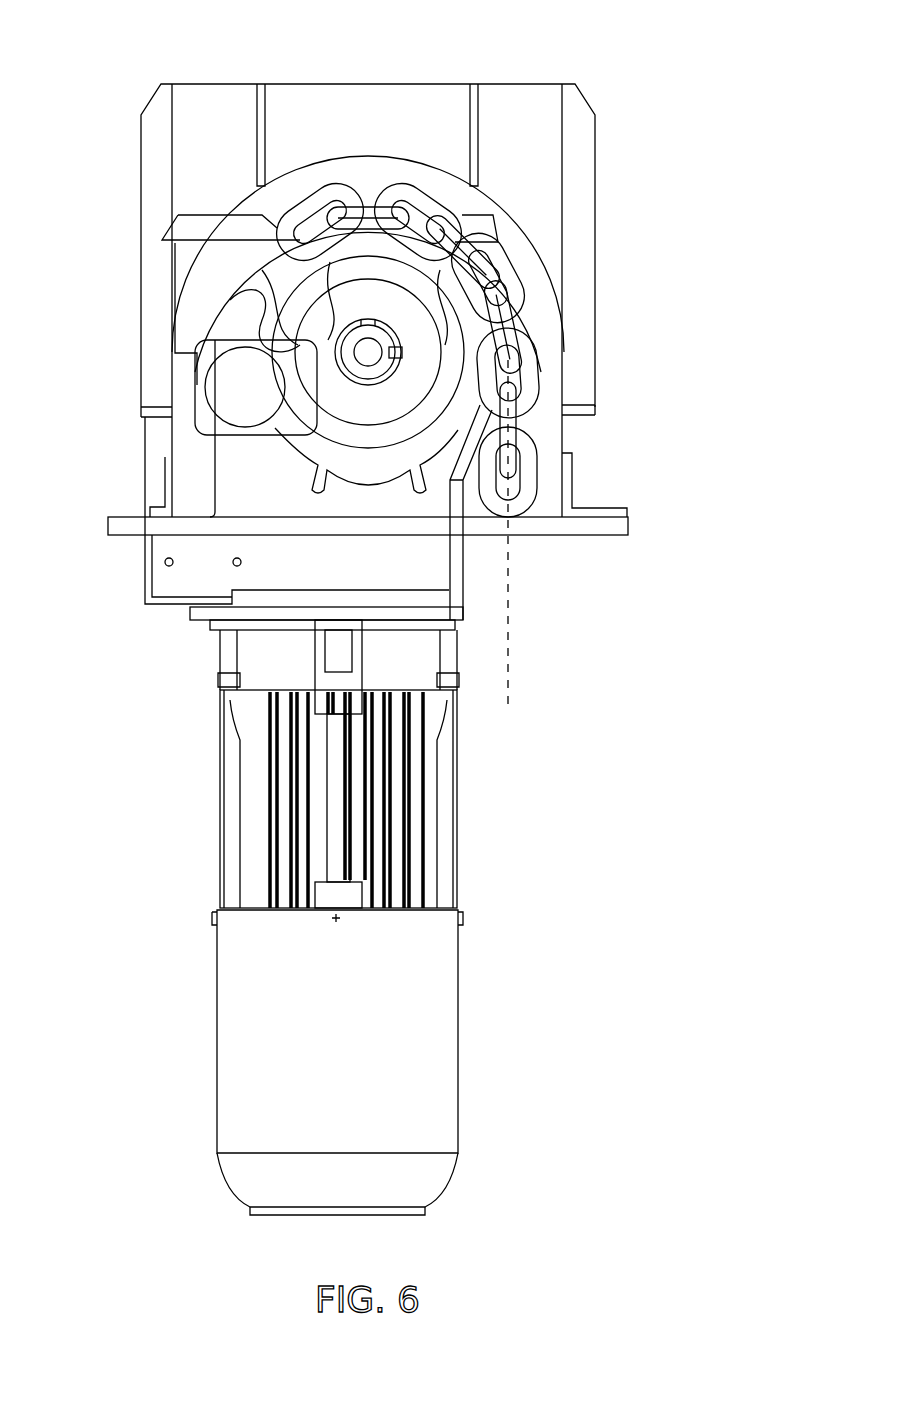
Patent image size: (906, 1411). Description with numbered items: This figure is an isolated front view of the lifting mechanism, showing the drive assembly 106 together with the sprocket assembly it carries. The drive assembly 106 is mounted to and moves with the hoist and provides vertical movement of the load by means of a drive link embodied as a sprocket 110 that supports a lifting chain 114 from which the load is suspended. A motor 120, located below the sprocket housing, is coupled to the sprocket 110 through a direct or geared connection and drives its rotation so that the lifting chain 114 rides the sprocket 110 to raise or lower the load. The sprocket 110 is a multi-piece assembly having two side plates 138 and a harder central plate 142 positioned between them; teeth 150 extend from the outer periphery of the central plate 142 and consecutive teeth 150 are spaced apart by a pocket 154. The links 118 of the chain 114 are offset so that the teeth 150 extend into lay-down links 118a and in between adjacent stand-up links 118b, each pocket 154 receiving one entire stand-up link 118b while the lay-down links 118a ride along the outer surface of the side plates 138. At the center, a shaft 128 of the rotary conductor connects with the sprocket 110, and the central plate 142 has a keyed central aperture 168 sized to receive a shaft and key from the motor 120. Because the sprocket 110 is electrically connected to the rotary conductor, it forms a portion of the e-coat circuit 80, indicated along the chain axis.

The drive assembly 106 is at (657, 66).
The sprocket 110 is at (245, 305).
The lifting chain 114 is at (537, 517).
The links 118 is at (537, 350).
The lay-down links 118a is at (375, 190).
The stand-up links 118b is at (305, 200).
The motor 120 is at (252, 648).
The shaft 128 is at (358, 355).
The side plates 138 is at (417, 332).
The central plate 142 is at (272, 390).
The teeth 150 is at (512, 312).
The pocket 154 is at (280, 282).
The keyed central aperture 168 is at (402, 352).
The e-coat circuit 80 is at (510, 680).